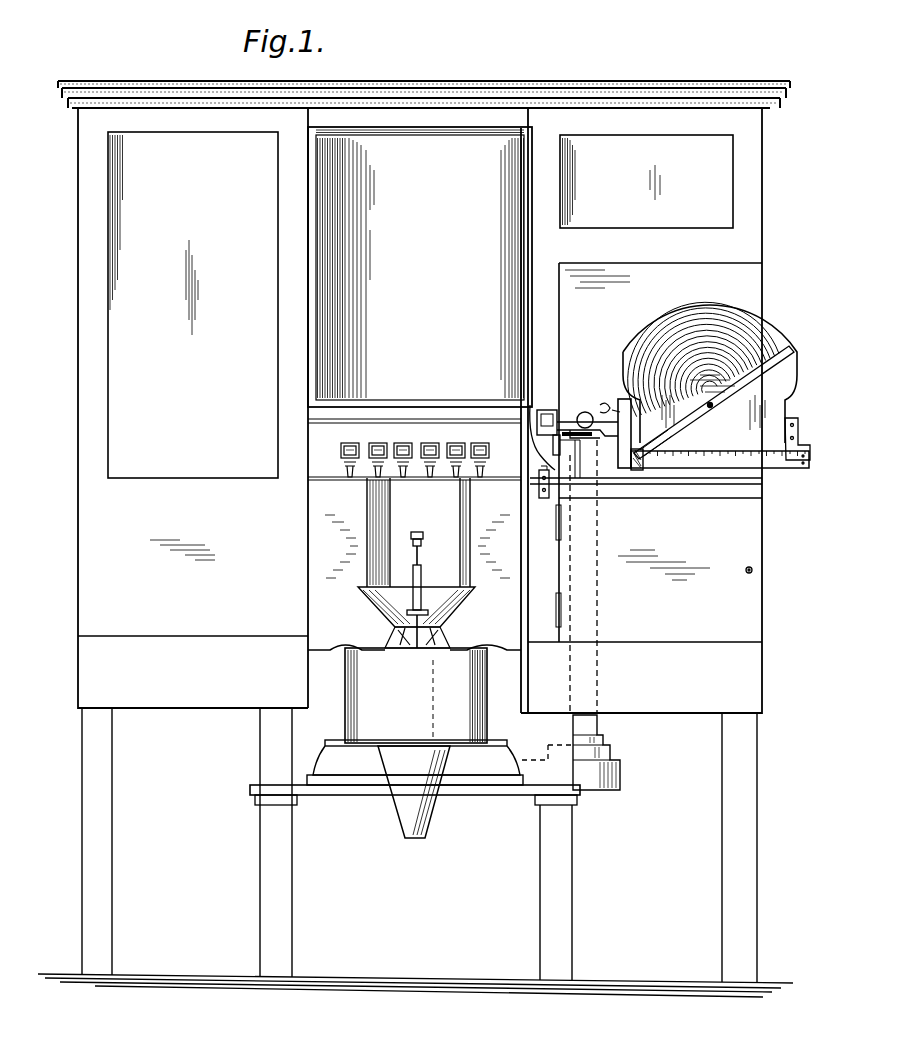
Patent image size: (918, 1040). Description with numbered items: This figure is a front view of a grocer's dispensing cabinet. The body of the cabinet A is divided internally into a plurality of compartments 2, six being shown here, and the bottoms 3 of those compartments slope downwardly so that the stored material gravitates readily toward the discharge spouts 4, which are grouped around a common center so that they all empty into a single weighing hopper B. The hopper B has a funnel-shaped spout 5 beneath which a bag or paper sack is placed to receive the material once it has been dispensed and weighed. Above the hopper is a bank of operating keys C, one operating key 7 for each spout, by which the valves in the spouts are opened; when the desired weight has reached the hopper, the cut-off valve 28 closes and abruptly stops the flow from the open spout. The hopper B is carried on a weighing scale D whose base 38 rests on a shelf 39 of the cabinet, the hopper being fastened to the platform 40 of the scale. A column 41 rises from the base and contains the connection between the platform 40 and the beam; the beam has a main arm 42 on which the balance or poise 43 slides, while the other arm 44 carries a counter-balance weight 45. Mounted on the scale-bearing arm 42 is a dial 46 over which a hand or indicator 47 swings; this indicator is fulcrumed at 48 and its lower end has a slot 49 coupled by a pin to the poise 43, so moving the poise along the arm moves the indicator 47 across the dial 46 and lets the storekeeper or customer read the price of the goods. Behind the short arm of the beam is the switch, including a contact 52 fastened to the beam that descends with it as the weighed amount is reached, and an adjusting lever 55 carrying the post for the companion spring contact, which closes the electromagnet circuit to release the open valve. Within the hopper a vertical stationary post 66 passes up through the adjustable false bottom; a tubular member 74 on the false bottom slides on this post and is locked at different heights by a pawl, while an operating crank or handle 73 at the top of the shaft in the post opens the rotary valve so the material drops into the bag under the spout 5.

The body of cabinet A is at (78, 380).
The weighing hopper B is at (416, 695).
The bank of operating keys C is at (472, 480).
The weighing scale D is at (579, 752).
The compartments 2 is at (82, 612).
The bottoms of compartments 3 is at (38, 282).
The discharge spouts 4 is at (420, 22).
The funnel-shaped spout 5 is at (414, 792).
The operating key 7 is at (434, 478).
The cut-off valve 28 is at (414, 649).
The base of scale 38 is at (478, 771).
The shelf 39 is at (362, 796).
The platform of scale 40 is at (488, 740).
The column / scale beam 41 is at (606, 410).
The main arm of beam 42 is at (712, 470).
The balance or poise 43 is at (636, 471).
The other arm of beam 44 is at (578, 412).
The counter-balance weight 45 is at (547, 410).
The dial 46 is at (666, 326).
The hand or indicator 47 is at (742, 385).
The fulcrum of indicator 48 is at (713, 407).
The slot 49 is at (660, 443).
The contact 52 is at (561, 448).
The adjusting lever 55 is at (545, 498).
The vertical stationary post 66 is at (422, 578).
The operating crank or handle 73 is at (423, 548).
The tubular member 74 is at (421, 617).